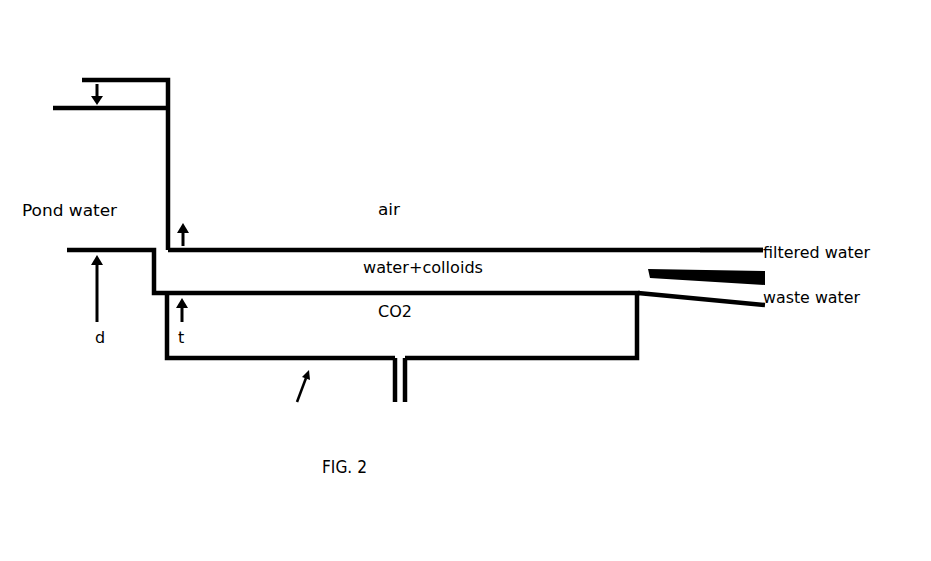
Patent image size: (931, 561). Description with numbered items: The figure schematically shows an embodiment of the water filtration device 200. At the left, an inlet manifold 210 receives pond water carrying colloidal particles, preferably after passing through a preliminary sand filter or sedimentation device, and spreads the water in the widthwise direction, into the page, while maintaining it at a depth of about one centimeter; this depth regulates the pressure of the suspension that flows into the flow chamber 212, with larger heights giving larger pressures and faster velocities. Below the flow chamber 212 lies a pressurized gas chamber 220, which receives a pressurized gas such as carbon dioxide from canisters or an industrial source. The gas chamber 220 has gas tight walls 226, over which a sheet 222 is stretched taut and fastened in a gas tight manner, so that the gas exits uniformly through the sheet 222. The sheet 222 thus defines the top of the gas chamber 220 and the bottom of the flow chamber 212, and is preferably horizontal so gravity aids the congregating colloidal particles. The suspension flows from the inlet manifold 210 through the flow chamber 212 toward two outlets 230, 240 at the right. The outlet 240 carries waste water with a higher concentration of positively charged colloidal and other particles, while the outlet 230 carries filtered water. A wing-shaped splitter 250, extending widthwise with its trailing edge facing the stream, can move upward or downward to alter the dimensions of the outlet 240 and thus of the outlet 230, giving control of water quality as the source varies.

The water filtration device 200 is at (287, 387).
The inlet manifold 210 is at (155, 122).
The flow chamber 212 is at (310, 267).
The pressurized gas chamber 220 is at (253, 322).
The sheet 222 is at (493, 297).
The gas tight walls 226 is at (578, 358).
The outlet 230 is at (707, 258).
The outlet 240 is at (705, 285).
The splitter 250 is at (748, 270).